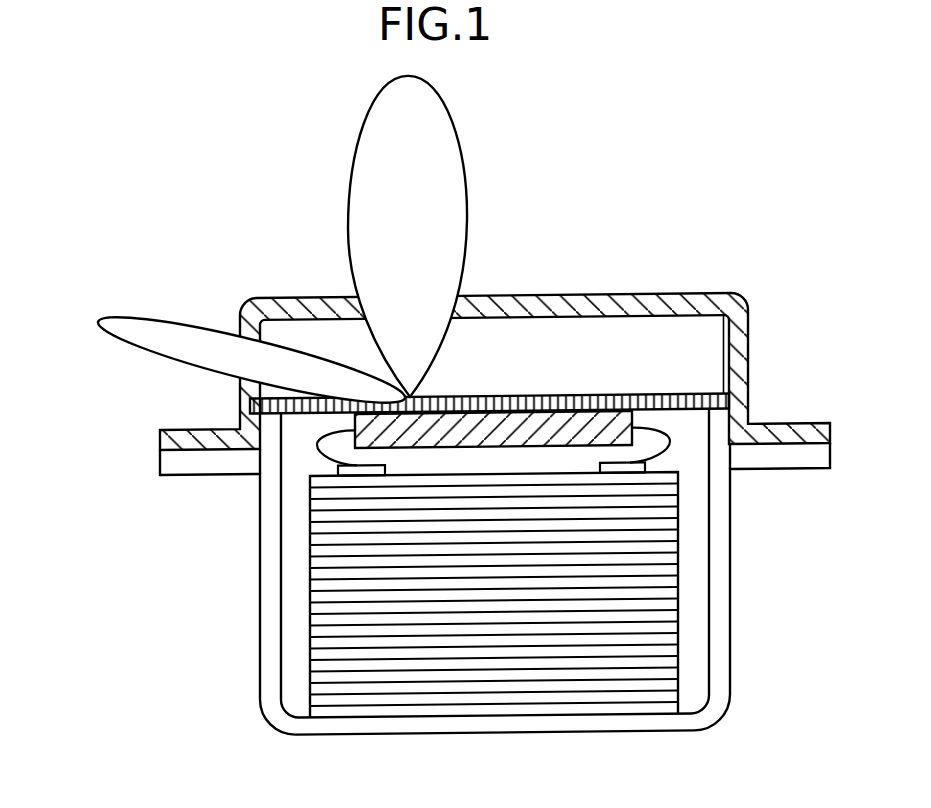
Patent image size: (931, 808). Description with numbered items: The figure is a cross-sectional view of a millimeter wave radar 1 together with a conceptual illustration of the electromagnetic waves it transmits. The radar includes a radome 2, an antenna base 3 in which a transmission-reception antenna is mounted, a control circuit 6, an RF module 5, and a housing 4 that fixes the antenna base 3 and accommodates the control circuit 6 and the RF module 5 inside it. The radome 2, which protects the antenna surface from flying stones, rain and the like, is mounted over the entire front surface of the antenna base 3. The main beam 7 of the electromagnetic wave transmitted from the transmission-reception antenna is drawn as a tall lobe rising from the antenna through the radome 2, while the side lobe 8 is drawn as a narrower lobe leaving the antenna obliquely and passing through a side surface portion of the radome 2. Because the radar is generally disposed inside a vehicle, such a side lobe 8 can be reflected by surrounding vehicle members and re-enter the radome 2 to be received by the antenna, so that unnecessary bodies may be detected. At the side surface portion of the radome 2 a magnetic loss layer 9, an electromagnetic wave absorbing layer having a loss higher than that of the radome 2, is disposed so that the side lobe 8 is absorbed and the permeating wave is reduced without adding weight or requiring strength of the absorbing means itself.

The ultrasonic sensor 1 is at (97, 282).
The radome 2 is at (302, 296).
The antenna base 3 is at (632, 404).
The housing 4 is at (720, 585).
The RF module 5 is at (557, 427).
The control circuit 6 is at (500, 687).
The main beam 7 is at (448, 141).
The side lobe 8 is at (190, 335).
The magnetic loss layer 9 is at (733, 362).